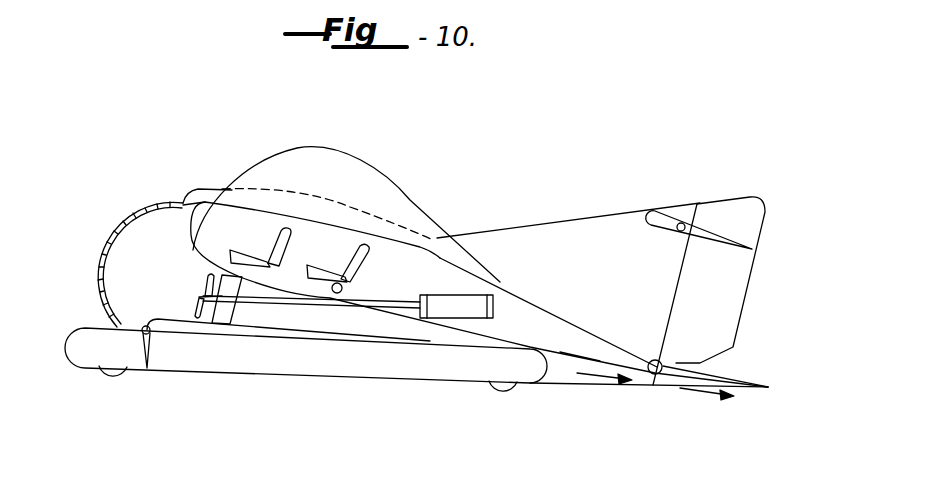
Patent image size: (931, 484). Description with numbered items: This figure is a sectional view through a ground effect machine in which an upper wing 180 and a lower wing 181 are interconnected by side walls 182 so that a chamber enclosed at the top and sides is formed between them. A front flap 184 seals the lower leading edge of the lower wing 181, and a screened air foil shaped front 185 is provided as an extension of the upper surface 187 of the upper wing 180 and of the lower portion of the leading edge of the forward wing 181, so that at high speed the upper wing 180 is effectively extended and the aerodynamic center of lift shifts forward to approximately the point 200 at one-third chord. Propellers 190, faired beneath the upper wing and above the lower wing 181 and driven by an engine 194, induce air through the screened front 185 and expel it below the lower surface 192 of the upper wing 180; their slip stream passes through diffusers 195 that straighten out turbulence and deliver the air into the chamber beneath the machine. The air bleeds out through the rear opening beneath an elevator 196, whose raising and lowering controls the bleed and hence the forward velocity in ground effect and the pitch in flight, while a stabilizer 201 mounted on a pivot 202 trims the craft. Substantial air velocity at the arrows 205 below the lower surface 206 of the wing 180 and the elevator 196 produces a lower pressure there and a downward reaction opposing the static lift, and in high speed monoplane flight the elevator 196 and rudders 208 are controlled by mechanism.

The upper wing 180 is at (532, 310).
The lower wing 181 is at (160, 320).
The side walls 182 is at (475, 267).
The front flap 184 is at (150, 343).
The screened air foil shaped front 185 is at (118, 234).
The upper surface 187 is at (203, 198).
The propellers 190 is at (207, 273).
The lower surface 192 is at (403, 319).
The engine 194 is at (440, 297).
The diffusers 195 is at (230, 308).
The elevator 196 is at (710, 373).
The center of lift 200 is at (347, 290).
The stabilizer 201 is at (660, 216).
The pivot 202 is at (680, 232).
The arrows 205 is at (600, 378).
The lower surface 206 is at (582, 363).
The rudders 208 is at (743, 283).